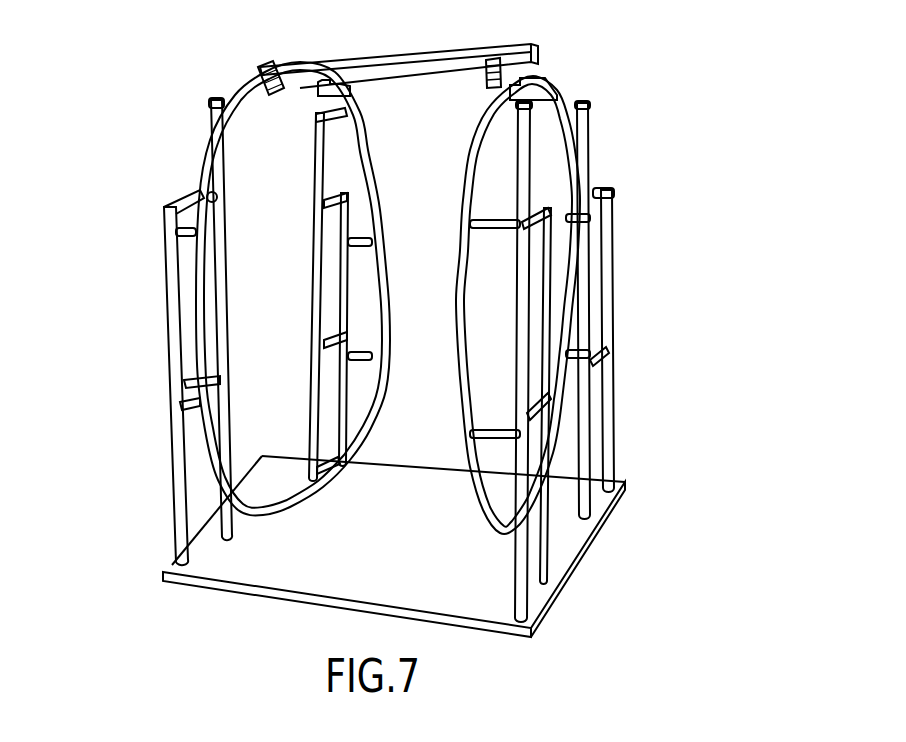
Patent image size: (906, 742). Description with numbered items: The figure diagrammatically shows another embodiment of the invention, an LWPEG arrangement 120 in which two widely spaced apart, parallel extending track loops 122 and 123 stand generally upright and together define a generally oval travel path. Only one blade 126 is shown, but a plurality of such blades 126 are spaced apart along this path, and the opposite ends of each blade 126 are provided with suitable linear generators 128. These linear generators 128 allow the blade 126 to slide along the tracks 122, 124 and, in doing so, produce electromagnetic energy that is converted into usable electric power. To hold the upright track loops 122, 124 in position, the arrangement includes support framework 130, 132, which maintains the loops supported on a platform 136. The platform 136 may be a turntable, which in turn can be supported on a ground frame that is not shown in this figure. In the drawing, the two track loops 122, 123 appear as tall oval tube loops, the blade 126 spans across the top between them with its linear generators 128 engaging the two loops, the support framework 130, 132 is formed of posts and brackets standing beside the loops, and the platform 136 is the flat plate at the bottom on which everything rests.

The LWPEG arrangement 120 is at (638, 163).
The track loop 122 is at (200, 186).
The track loop 123 is at (575, 150).
The track 124 is at (624, 305).
The blade 126 is at (430, 48).
The linear generator 128 is at (260, 76).
The support framework 130 is at (168, 398).
The support framework 132 is at (613, 306).
The platform 136 is at (552, 544).